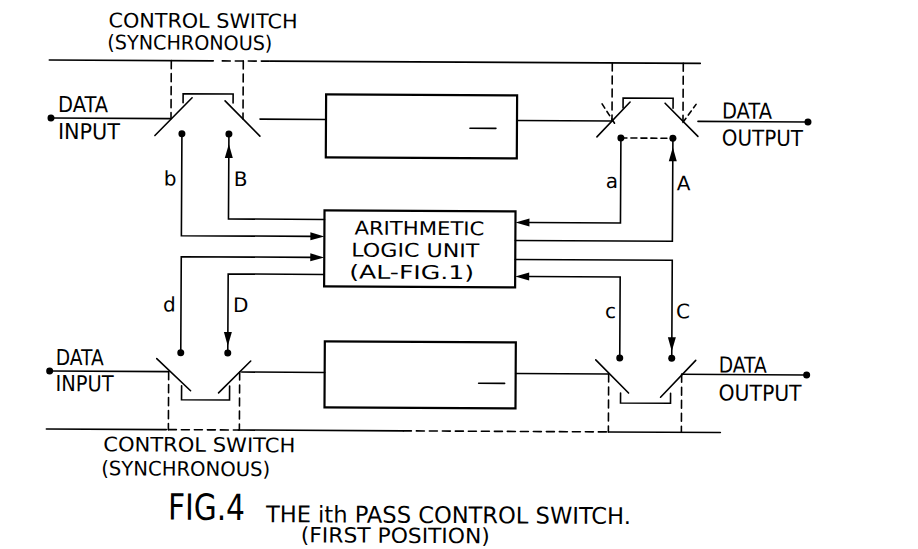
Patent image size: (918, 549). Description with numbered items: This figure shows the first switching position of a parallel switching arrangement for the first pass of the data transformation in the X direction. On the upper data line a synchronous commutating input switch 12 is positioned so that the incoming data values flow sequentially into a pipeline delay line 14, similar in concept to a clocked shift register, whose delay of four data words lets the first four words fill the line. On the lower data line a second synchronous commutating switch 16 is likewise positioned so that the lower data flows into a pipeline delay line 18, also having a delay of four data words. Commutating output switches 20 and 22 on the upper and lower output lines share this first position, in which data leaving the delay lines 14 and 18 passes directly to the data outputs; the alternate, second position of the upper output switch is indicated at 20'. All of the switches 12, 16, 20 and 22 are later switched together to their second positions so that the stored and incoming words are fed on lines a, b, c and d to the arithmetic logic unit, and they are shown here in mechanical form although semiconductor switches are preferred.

The synchronous commutating switch 12 is at (294, 57).
The pipeline delay line 14 is at (438, 93).
The synchronous commutating switch 16 is at (249, 414).
The pipeline delay line 18 is at (410, 339).
The commutating output switch 20 is at (664, 93).
The second position of upper output switch 20' is at (633, 140).
The commutating output switch 22 is at (687, 359).